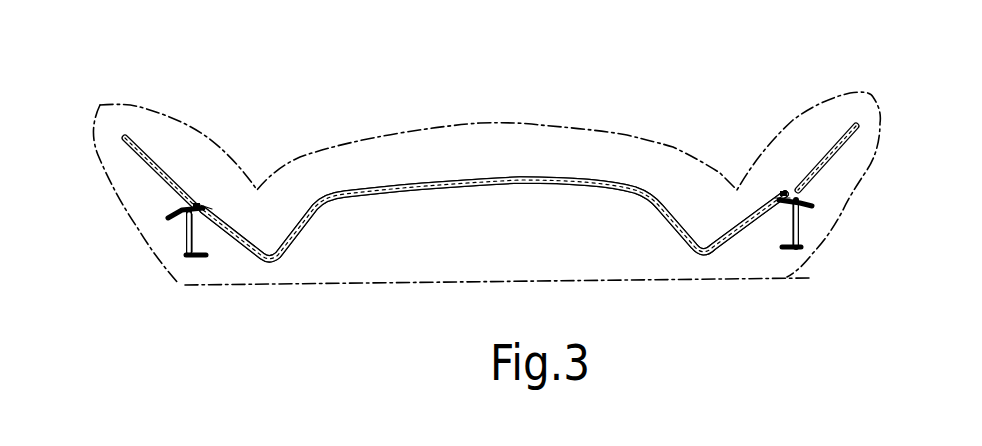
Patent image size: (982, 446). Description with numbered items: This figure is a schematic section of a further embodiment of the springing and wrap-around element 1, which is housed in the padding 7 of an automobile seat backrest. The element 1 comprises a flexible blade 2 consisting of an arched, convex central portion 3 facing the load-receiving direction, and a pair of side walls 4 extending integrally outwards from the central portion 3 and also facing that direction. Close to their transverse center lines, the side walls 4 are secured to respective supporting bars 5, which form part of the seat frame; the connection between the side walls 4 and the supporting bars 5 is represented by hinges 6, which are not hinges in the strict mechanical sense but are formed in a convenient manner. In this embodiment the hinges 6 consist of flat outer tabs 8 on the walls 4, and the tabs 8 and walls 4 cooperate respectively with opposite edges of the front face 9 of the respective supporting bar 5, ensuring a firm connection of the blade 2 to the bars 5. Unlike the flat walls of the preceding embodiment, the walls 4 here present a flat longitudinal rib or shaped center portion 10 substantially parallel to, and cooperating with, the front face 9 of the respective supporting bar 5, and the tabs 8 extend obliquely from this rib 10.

The springing and wrap-around element 1 is at (523, 166).
The flexible blade 2 is at (475, 176).
The central portion 3 is at (407, 187).
The side walls 4 is at (138, 151).
The supporting bars 5 is at (205, 258).
The hinges 6 is at (212, 236).
The padding 7 is at (573, 163).
The tabs 8 is at (187, 213).
The front face 9 is at (198, 196).
The rib 10 is at (204, 204).